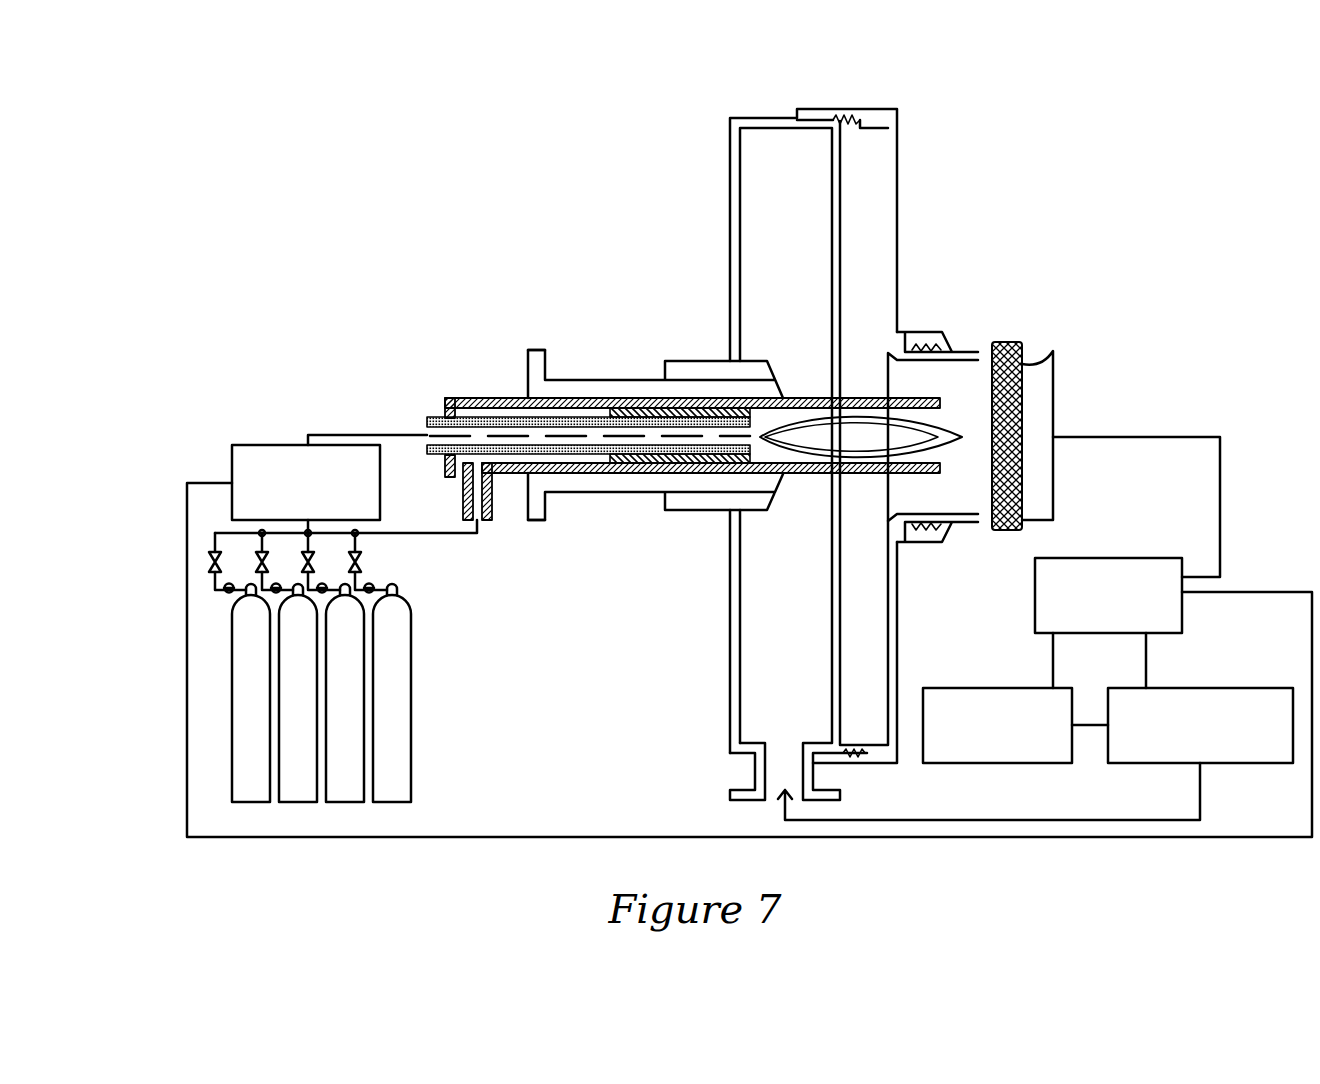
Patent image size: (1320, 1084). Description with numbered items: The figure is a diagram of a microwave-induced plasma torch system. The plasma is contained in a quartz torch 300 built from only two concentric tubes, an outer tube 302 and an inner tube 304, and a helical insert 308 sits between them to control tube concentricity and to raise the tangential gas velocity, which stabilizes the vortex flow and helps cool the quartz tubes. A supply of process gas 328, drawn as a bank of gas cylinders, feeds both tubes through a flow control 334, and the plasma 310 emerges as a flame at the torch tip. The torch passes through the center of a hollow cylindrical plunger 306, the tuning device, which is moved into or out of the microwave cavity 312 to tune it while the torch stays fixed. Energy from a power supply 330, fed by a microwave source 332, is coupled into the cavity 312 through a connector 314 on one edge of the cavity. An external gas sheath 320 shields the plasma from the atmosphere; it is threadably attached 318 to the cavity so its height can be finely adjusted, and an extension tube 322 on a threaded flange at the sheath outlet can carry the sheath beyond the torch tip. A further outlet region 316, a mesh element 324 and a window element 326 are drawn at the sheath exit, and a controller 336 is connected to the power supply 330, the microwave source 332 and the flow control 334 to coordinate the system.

The quartz torch 300 is at (479, 366).
The outer tube 302 is at (443, 399).
The inner tube 304 is at (428, 416).
The hollow cylindrical plunger 306 is at (538, 521).
The helical insert 308 is at (621, 464).
The plasma flame 310 is at (818, 403).
The microwave cavity 312 is at (730, 595).
The connector 314 is at (733, 800).
The waveguide opening 316 is at (857, 482).
The threaded attachment 318 is at (812, 110).
The external gas sheath 320 is at (897, 223).
The extension tube 322 is at (922, 332).
The mesh screen 324 is at (1053, 353).
The window 326 is at (1055, 407).
The supply of process gas 328 is at (232, 690).
The power supply 330 is at (1035, 763).
The microwave source 332 is at (1183, 763).
The flow control 334 is at (232, 452).
The controller 336 is at (1072, 558).